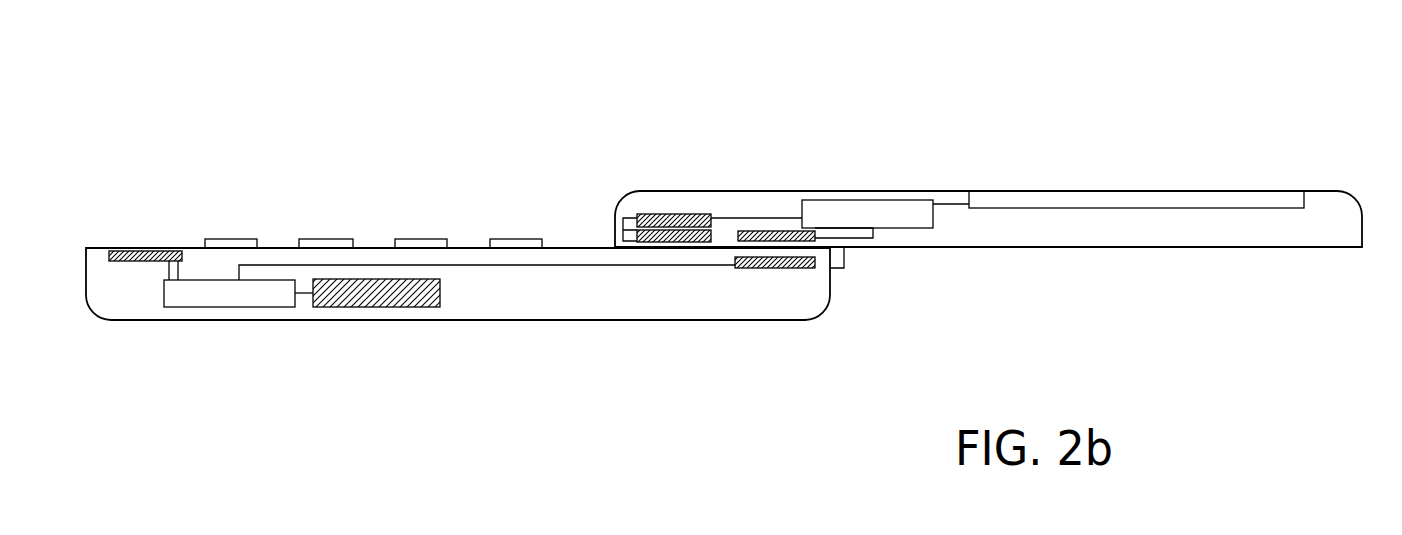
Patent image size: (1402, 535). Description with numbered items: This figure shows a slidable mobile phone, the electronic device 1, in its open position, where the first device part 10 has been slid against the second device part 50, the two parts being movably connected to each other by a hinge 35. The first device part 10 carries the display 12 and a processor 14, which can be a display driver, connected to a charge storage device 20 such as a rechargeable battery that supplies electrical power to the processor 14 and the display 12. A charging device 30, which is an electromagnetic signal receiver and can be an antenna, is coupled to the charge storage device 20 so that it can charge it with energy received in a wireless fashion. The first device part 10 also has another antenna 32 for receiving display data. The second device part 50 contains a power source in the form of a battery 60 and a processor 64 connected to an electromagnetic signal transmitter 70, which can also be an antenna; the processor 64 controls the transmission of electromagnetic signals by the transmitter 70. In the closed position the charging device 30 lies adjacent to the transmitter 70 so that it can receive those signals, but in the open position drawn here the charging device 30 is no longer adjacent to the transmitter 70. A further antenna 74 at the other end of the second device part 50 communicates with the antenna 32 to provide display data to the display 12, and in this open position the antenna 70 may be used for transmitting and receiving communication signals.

The electronic device 1 is at (553, 73).
The first device part 10 is at (1280, 243).
The display 12 is at (1157, 198).
The processor 14 is at (888, 203).
The charge storage device 20 is at (667, 215).
The charging device 30 is at (713, 237).
The antenna 32 is at (760, 237).
The hinge 35 is at (845, 264).
The second device part 50 is at (543, 317).
The battery 60 is at (392, 308).
The processor 64 is at (258, 304).
The electromagnetic signal transmitter 70 is at (135, 252).
The antenna 74 is at (769, 270).